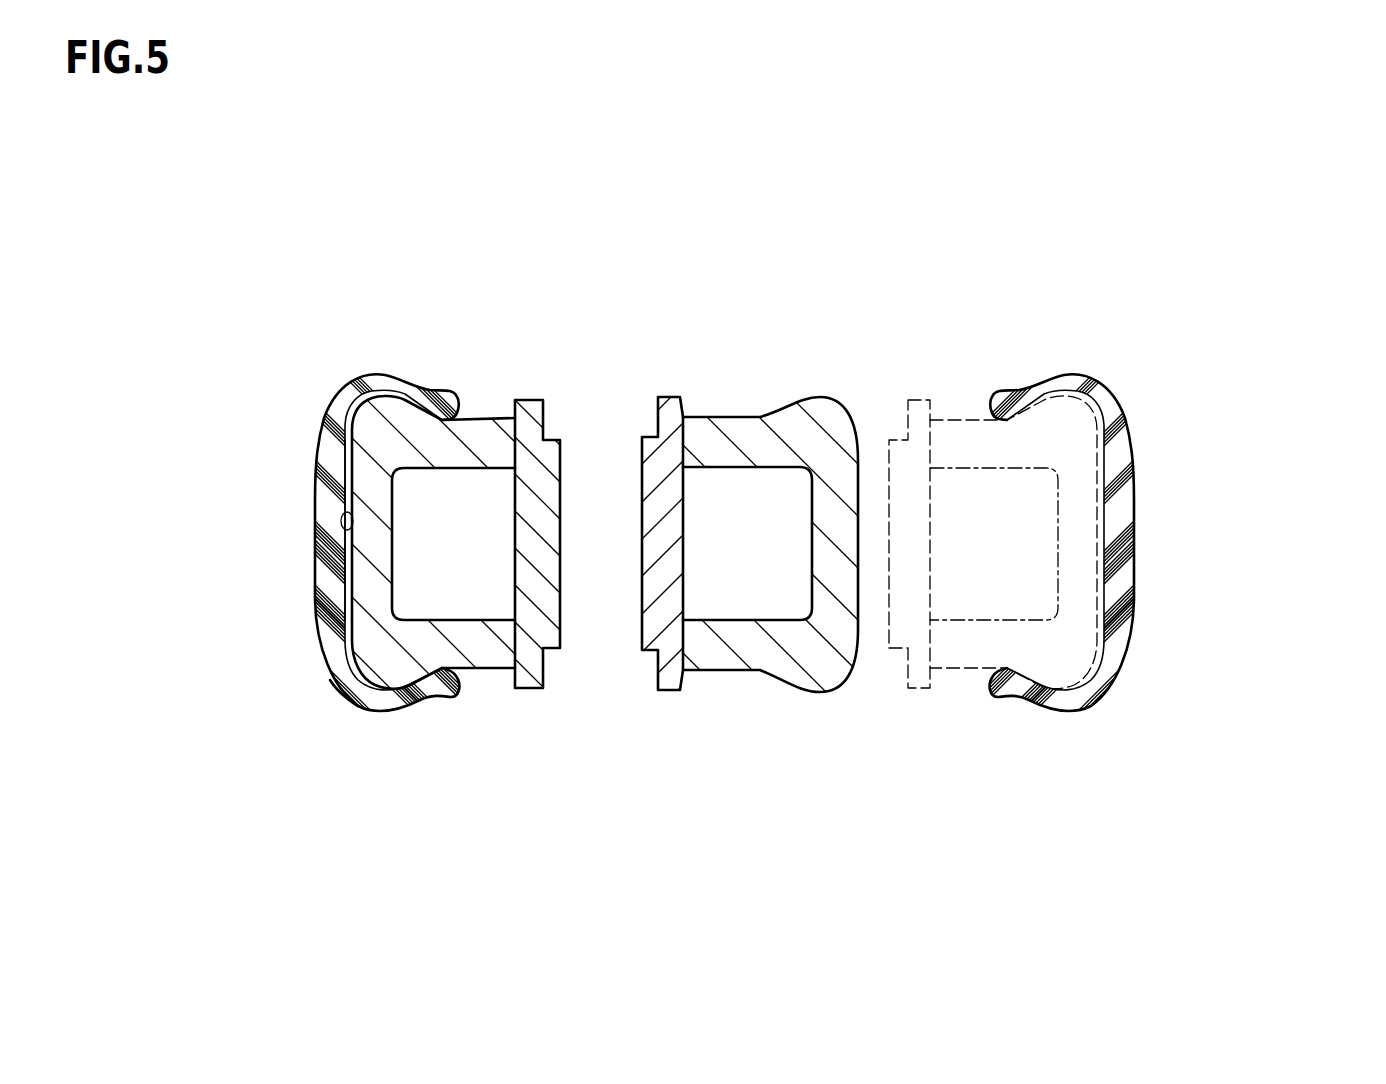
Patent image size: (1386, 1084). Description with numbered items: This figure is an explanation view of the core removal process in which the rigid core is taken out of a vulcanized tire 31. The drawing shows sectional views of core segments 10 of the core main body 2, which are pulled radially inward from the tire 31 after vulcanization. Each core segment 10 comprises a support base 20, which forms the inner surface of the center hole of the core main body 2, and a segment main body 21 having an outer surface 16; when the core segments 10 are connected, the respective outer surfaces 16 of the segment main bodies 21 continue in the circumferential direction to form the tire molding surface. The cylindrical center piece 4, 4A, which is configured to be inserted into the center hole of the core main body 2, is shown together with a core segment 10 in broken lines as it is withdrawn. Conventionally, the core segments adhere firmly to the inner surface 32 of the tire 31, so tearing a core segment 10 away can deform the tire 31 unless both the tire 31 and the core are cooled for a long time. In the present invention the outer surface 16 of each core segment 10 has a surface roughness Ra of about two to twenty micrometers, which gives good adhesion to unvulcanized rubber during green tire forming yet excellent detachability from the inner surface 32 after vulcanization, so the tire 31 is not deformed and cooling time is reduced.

The core main body 2 is at (497, 340).
The core segment 10 is at (388, 420).
The outer surface 16 is at (343, 584).
The support base 20 is at (674, 668).
The segment main body 21 is at (758, 657).
The vulcanized tire 31 is at (370, 703).
The inner surface 32 is at (350, 522).
The center piece 4 is at (1120, 540).
The alternative assembly variant 4A is at (1200, 710).